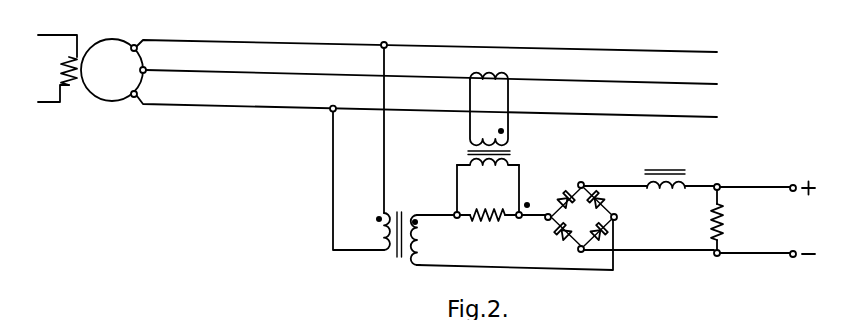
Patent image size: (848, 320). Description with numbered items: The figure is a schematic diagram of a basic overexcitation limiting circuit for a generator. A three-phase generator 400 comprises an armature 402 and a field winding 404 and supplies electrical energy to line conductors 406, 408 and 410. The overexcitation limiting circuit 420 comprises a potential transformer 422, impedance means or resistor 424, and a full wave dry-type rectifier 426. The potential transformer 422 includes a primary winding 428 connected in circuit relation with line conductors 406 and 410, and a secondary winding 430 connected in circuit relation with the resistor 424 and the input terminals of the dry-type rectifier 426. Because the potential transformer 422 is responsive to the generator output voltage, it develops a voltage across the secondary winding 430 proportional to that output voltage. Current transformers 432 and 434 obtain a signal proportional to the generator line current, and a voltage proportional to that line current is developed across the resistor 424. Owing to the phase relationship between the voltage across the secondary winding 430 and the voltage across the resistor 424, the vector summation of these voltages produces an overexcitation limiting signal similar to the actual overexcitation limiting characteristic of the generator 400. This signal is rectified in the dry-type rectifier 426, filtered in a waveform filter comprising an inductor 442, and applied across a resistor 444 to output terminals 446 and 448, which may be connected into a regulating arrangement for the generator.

The three-phase generator 400 is at (83, 68).
The armature 402 is at (112, 101).
The field winding 404 is at (60, 76).
The line conductor 406 is at (675, 51).
The line conductor 408 is at (673, 84).
The line conductor 410 is at (674, 116).
The overexcitation limiting circuit 420 is at (515, 223).
The potential transformer 422 is at (402, 247).
The impedance means 424 is at (488, 206).
The full wave dry-type rectifier 426 is at (595, 226).
The primary winding 428 is at (383, 234).
The secondary winding 430 is at (417, 232).
The current transformer 432 is at (491, 71).
The current transformer 434 is at (511, 152).
The inductor 442 is at (665, 170).
The resistor 444 is at (723, 216).
The output terminal 446 is at (790, 186).
The output terminal 448 is at (790, 258).